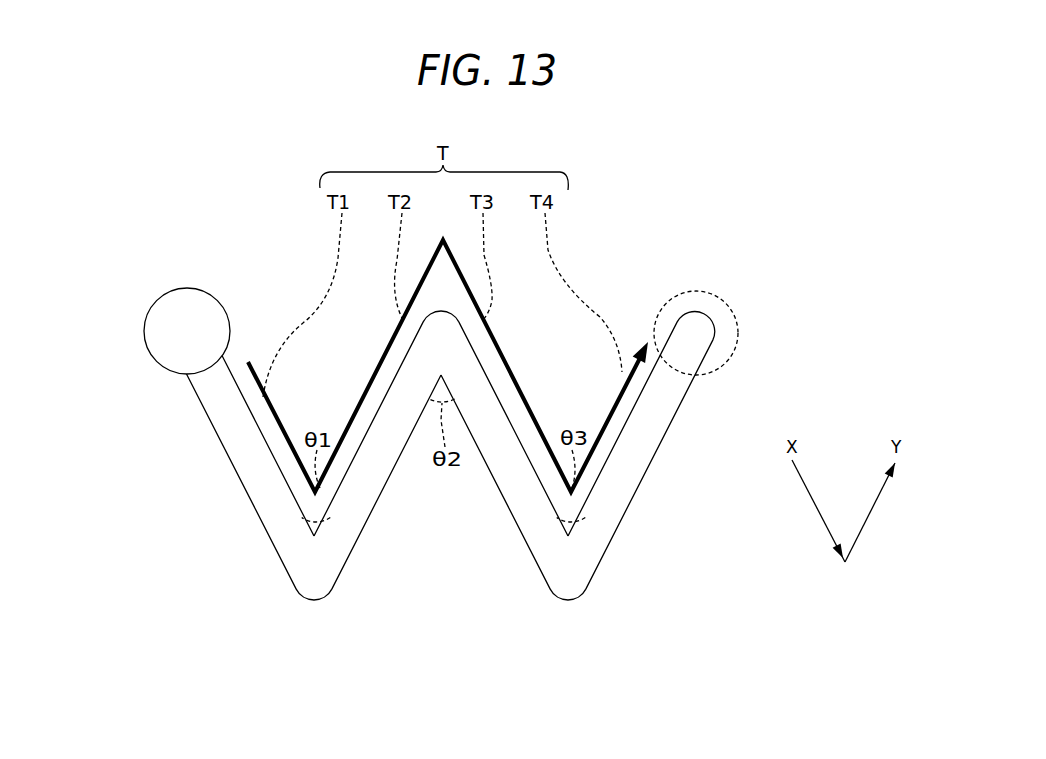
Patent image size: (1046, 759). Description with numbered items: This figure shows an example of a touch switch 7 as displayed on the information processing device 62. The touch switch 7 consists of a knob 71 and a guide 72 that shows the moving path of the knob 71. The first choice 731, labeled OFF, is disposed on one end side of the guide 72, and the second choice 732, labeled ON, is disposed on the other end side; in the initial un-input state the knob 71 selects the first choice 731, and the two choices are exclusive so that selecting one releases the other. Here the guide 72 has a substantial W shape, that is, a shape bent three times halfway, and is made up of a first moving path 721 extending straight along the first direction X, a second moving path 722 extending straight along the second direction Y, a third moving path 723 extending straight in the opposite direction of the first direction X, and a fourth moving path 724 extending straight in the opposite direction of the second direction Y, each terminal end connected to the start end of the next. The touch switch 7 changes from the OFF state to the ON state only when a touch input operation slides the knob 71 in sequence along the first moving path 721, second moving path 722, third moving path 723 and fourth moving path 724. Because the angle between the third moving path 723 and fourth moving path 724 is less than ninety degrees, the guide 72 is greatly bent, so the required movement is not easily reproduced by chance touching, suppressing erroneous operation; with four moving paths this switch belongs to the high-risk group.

The information processing device 62 is at (127, 120).
The touch switch 7 is at (274, 188).
The knob 71 is at (210, 322).
The guide 72 is at (442, 455).
The first moving path 721 is at (244, 455).
The second moving path 722 is at (343, 530).
The third moving path 723 is at (492, 417).
The fourth moving path 724 is at (635, 460).
The first choice 731 is at (188, 227).
The second choice 732 is at (697, 228).